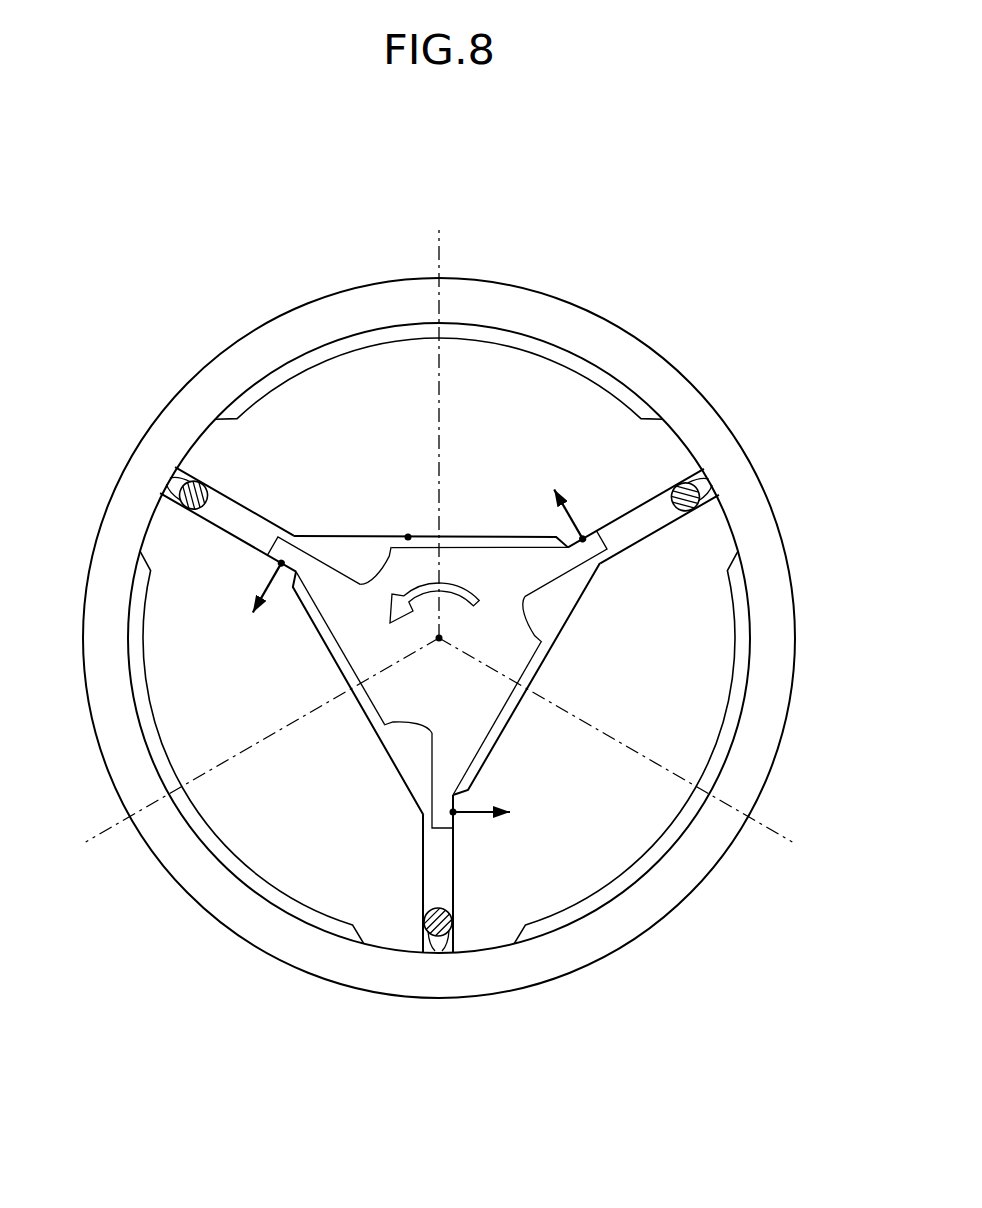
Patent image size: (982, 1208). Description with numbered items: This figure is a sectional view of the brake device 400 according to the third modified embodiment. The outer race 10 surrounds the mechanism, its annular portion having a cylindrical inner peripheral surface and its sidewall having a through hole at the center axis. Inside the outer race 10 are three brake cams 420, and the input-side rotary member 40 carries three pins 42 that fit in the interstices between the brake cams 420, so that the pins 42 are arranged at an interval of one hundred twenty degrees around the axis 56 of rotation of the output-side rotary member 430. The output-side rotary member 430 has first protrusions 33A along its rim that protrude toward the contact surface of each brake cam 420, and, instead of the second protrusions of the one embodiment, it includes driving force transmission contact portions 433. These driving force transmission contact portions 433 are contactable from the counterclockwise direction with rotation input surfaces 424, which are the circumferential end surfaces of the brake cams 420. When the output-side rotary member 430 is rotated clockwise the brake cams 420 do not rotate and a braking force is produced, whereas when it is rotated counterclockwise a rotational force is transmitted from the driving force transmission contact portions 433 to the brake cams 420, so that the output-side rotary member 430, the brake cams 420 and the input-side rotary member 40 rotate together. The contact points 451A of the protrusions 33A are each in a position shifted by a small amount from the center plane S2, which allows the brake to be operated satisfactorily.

The brake device 400 is at (716, 242).
The outer race 10 is at (660, 350).
The brake cam 420 is at (566, 362).
The input-side rotary member 40 is at (439, 709).
The pin 42 is at (675, 482).
The rotation input surface 424 is at (710, 486).
The output-side rotary member 430 is at (480, 537).
The driving force transmission contact portion 433 is at (311, 558).
The first protrusion 33A is at (398, 550).
The contact point 451A is at (408, 535).
The axis of rotation 56 is at (440, 644).
The center plane S2 is at (445, 248).